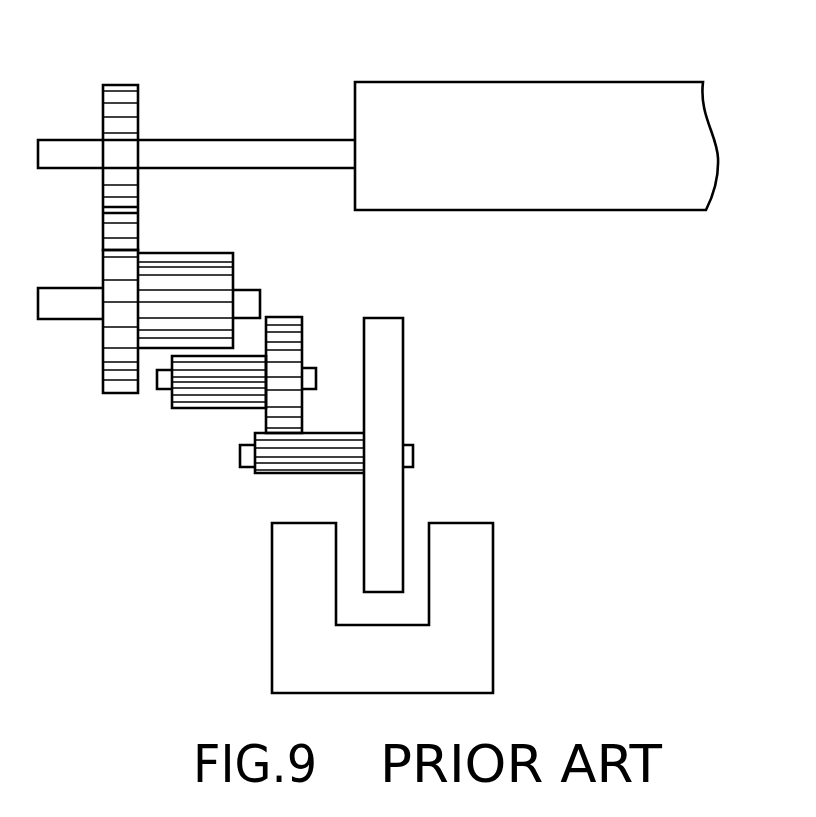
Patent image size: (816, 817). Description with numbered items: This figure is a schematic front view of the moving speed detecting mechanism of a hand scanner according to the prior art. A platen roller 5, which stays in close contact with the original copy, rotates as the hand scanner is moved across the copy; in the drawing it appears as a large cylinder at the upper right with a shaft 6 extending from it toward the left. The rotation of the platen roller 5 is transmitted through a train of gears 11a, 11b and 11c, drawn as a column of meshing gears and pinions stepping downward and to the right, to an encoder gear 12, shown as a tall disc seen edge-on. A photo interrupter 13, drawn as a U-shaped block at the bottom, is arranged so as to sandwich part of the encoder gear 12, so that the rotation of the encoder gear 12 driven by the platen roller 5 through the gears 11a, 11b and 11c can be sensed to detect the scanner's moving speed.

The platen roller 5 is at (606, 83).
The motor shaft 6 is at (227, 139).
The gear 11a is at (124, 85).
The gear 11b is at (103, 375).
The gear 11c is at (211, 409).
The encoder gear 12 is at (404, 405).
The photo interrupter 13 is at (494, 582).